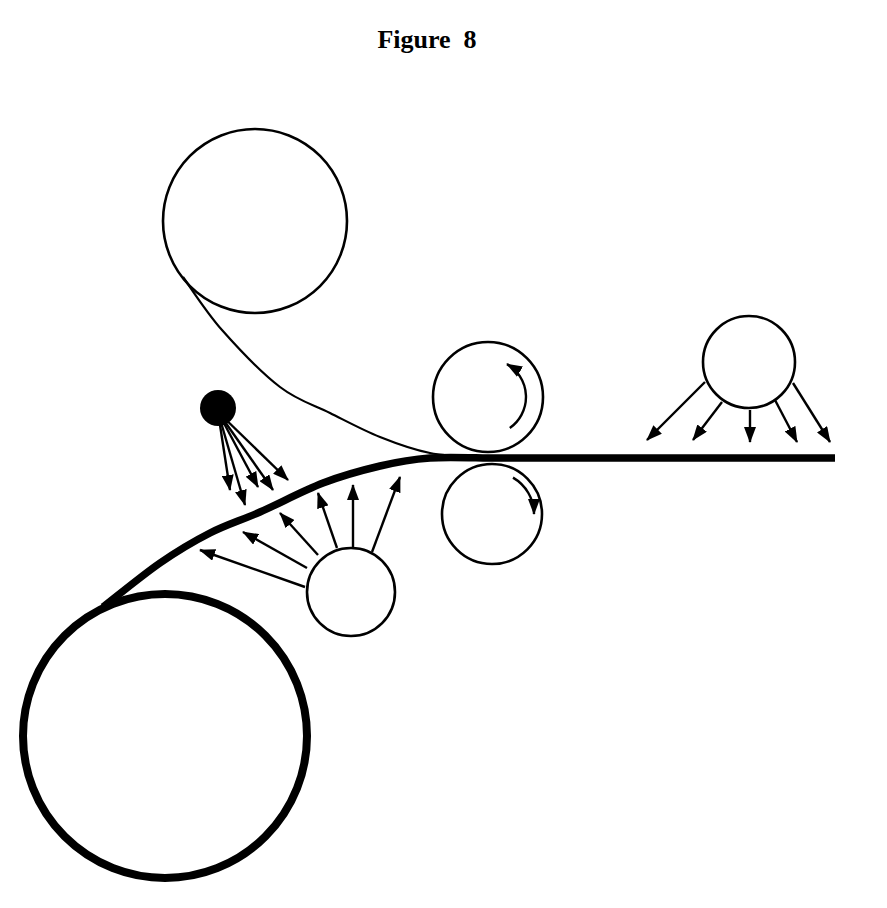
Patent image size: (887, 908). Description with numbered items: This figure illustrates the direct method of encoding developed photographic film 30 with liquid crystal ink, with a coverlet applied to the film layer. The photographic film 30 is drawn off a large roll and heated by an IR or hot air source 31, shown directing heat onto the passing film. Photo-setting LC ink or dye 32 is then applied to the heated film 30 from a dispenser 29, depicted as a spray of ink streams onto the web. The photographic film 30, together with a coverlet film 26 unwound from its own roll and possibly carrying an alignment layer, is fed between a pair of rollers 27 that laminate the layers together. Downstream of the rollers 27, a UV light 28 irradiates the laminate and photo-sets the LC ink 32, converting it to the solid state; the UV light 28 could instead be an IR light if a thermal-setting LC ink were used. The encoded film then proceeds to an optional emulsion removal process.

The coverlet film 26 is at (328, 410).
The rollers 27 is at (538, 480).
The UV light 28 is at (738, 379).
The dispenser 29 is at (200, 408).
The photographic film 30 is at (317, 447).
The IR or hot air source 31 is at (300, 556).
The LC ink 32 is at (223, 468).